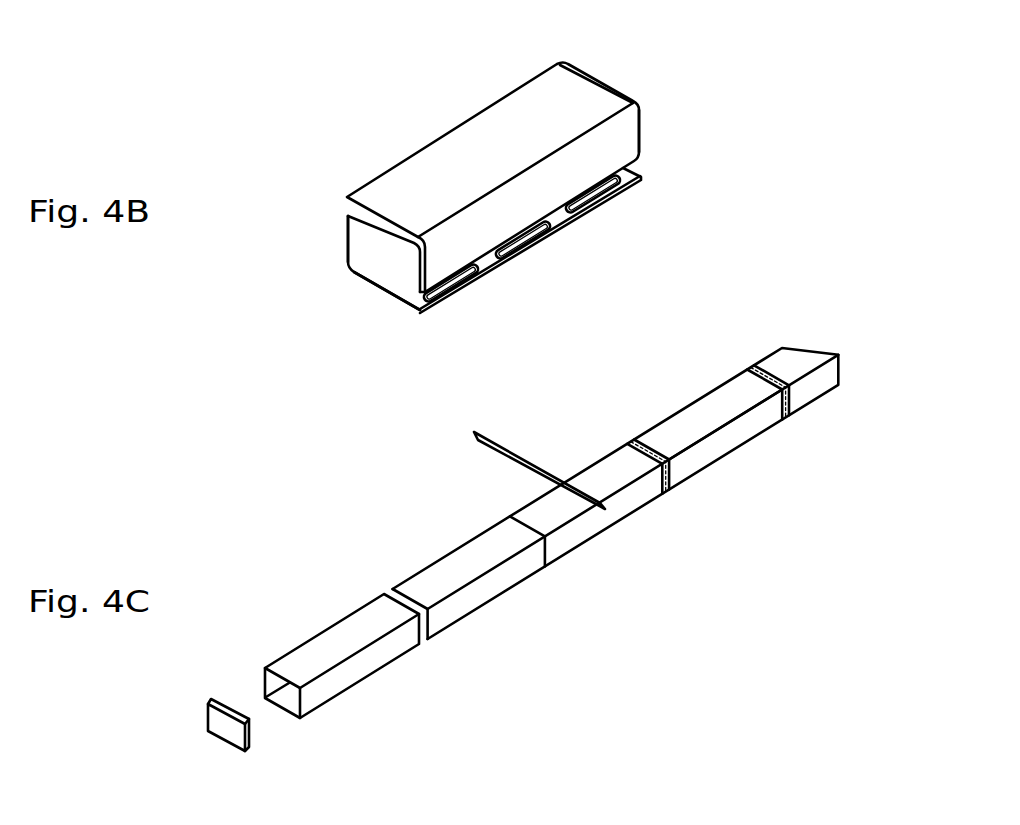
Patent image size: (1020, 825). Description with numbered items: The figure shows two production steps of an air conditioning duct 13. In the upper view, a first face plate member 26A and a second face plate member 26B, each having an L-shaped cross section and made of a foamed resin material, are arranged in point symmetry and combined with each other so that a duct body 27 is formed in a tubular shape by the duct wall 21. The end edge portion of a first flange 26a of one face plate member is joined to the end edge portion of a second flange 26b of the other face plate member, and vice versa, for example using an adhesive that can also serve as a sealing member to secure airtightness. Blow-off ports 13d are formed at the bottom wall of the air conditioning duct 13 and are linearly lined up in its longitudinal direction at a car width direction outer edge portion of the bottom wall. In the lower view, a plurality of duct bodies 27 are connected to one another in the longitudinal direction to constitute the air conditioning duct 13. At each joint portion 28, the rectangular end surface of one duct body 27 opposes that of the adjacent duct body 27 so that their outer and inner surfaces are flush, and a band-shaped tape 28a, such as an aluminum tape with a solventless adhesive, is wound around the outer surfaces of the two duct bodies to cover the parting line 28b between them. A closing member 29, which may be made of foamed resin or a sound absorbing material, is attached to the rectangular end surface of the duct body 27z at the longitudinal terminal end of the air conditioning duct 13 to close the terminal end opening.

In FIG. 4C, the air conditioning duct 13 is at (817, 314).
In FIG. 4B, the blow-off ports 13d is at (473, 288).
In FIG. 4C, the duct wall 21 is at (722, 443).
In FIG. 4B, the first face plate member 26A is at (348, 268).
In FIG. 4B, the second face plate member 26B is at (482, 130).
In FIG. 4B, the first flange 26a is at (583, 92).
In FIG. 4B, the second flange 26b is at (621, 140).
In FIG. 4C, the duct body 27 is at (480, 613).
In FIG. 4C, the duct body arranged at a longitudinal direction terminal end 27z is at (327, 640).
In FIG. 4C, the joint portion 28 is at (386, 576).
In FIG. 4C, the band-shaped tape 28a is at (502, 442).
In FIG. 4C, the parting line 28b is at (646, 442).
In FIG. 4C, the closing member 29 is at (226, 729).